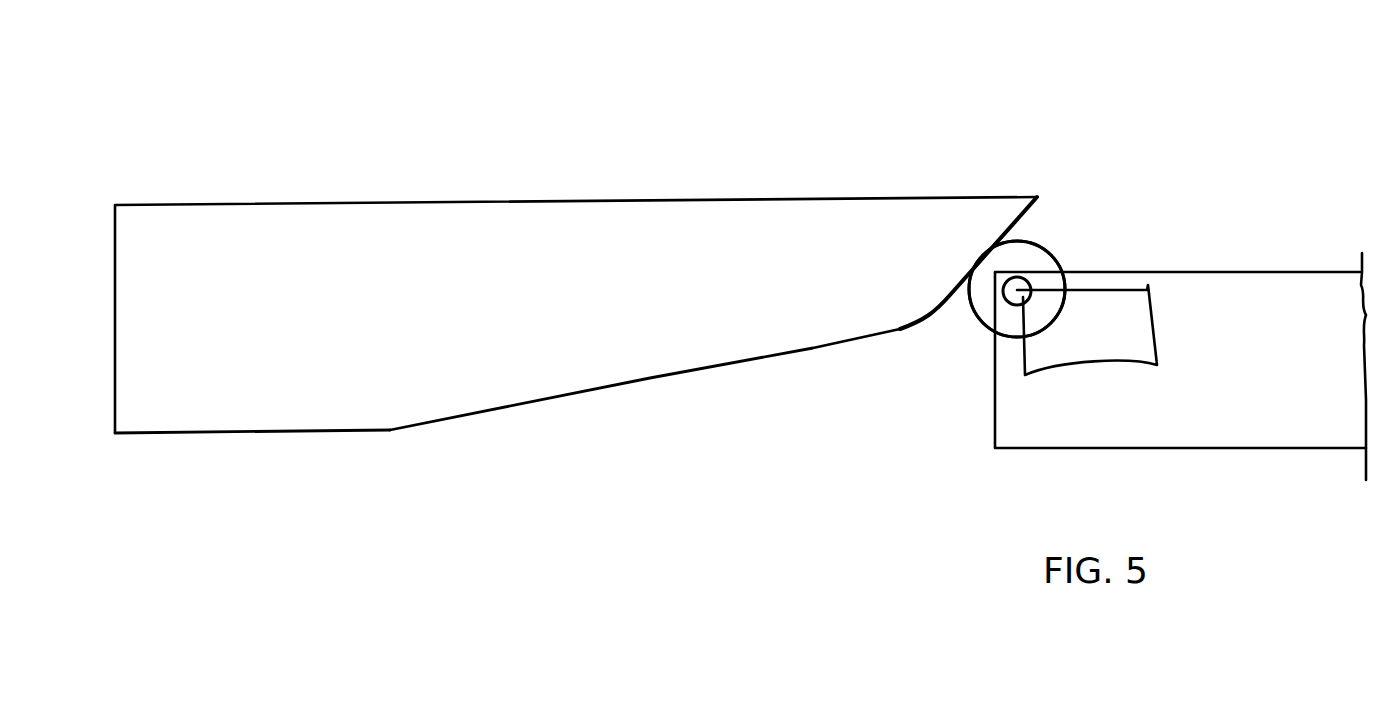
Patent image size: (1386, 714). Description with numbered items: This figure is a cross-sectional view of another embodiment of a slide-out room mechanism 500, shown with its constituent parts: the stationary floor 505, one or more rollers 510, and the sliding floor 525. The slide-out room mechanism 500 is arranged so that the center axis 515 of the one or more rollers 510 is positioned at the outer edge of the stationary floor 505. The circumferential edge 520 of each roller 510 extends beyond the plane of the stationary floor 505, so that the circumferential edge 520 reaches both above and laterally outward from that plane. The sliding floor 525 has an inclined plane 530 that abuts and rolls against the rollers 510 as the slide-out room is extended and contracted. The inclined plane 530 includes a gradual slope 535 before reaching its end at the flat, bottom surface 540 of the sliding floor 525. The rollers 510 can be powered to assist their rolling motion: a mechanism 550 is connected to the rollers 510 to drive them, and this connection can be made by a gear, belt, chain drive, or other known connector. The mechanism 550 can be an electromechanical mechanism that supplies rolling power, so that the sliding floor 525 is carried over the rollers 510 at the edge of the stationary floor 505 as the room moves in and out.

The slide-out room mechanism 500 is at (675, 72).
The stationary floor 505 is at (1263, 283).
The rollers 510 is at (1017, 260).
The center axis 515 is at (1017, 292).
The circumferential edge 520 is at (1048, 252).
The sliding floor 525 is at (292, 245).
The inclined plane 530 is at (997, 237).
The gradual slope 535 is at (690, 373).
The flat bottom surface 540 is at (248, 430).
The mechanism 550 is at (1143, 350).